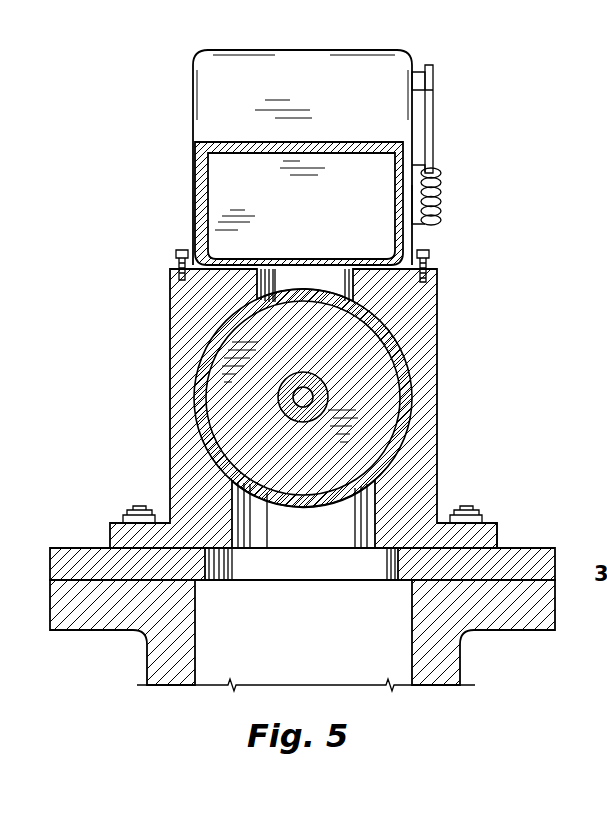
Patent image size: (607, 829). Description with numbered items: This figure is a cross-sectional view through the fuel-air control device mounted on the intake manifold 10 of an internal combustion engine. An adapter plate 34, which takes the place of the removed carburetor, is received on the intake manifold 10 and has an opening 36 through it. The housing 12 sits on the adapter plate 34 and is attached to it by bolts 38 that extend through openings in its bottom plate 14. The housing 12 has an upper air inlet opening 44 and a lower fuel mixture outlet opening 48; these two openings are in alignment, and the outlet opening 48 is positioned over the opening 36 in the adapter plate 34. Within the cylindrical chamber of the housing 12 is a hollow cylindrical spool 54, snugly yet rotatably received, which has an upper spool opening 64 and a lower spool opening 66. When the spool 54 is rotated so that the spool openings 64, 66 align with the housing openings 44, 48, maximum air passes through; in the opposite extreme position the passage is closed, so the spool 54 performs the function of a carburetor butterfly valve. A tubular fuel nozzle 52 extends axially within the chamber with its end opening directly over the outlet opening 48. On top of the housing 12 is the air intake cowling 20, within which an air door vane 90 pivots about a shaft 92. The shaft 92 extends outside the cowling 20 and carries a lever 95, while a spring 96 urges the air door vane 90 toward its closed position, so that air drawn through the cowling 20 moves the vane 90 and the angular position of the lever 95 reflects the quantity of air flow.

The intake manifold 10 is at (518, 612).
The housing 12 is at (183, 298).
The bottom plate 14 is at (497, 533).
The air intake cowling 20 is at (313, 50).
The adapter plate 34 is at (525, 560).
The opening 36 is at (389, 565).
The bolts 38 is at (138, 508).
The upper air inlet opening 44 is at (340, 286).
The lower fuel mixture outlet opening 48 is at (237, 518).
The tubular fuel nozzle 52 is at (308, 374).
The cylindrical spool 54 is at (405, 386).
The upper spool opening 64 is at (285, 296).
The lower spool opening 66 is at (302, 494).
The air door vane 90 is at (248, 193).
The shaft 92 is at (418, 73).
The lever 95 is at (436, 126).
The spring 96 is at (442, 188).